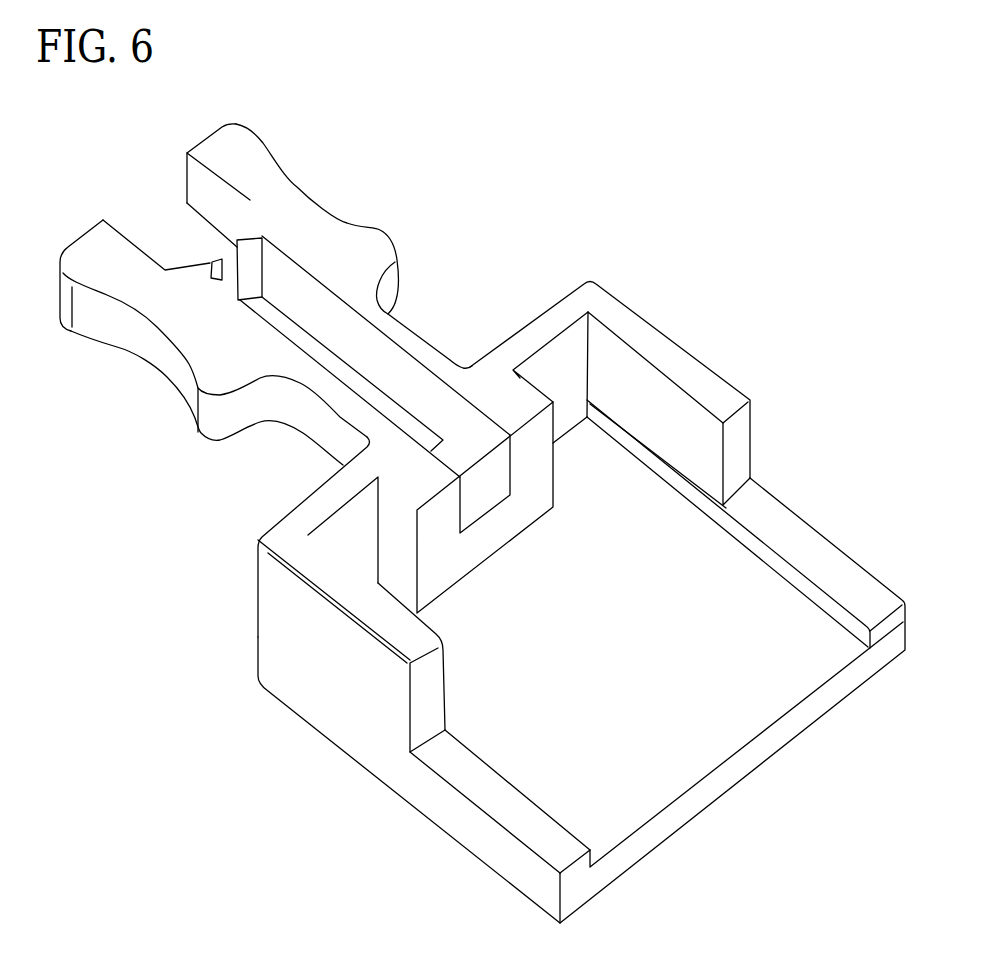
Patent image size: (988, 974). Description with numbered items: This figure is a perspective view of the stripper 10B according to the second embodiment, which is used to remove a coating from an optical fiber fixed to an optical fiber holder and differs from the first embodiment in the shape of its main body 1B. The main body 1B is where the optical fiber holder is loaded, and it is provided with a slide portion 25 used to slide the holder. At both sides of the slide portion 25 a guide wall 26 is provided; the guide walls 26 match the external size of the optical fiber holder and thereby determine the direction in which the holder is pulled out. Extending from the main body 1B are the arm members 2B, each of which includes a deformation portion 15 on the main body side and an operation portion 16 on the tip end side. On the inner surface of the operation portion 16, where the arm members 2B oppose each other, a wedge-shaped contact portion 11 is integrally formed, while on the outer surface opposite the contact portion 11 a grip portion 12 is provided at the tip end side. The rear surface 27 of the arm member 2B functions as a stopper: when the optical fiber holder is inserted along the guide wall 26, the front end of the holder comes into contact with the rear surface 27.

The main body 1B is at (534, 575).
The stripper 10B is at (339, 354).
The arm member 2B is at (350, 213).
The contact portion 11 is at (245, 235).
The grip portion 12 is at (292, 182).
The deformation portion 15 is at (345, 376).
The operation portion 16 is at (343, 243).
The slide portion 25 is at (702, 722).
The guide wall 26 is at (672, 400).
The rear surface 27 is at (377, 583).